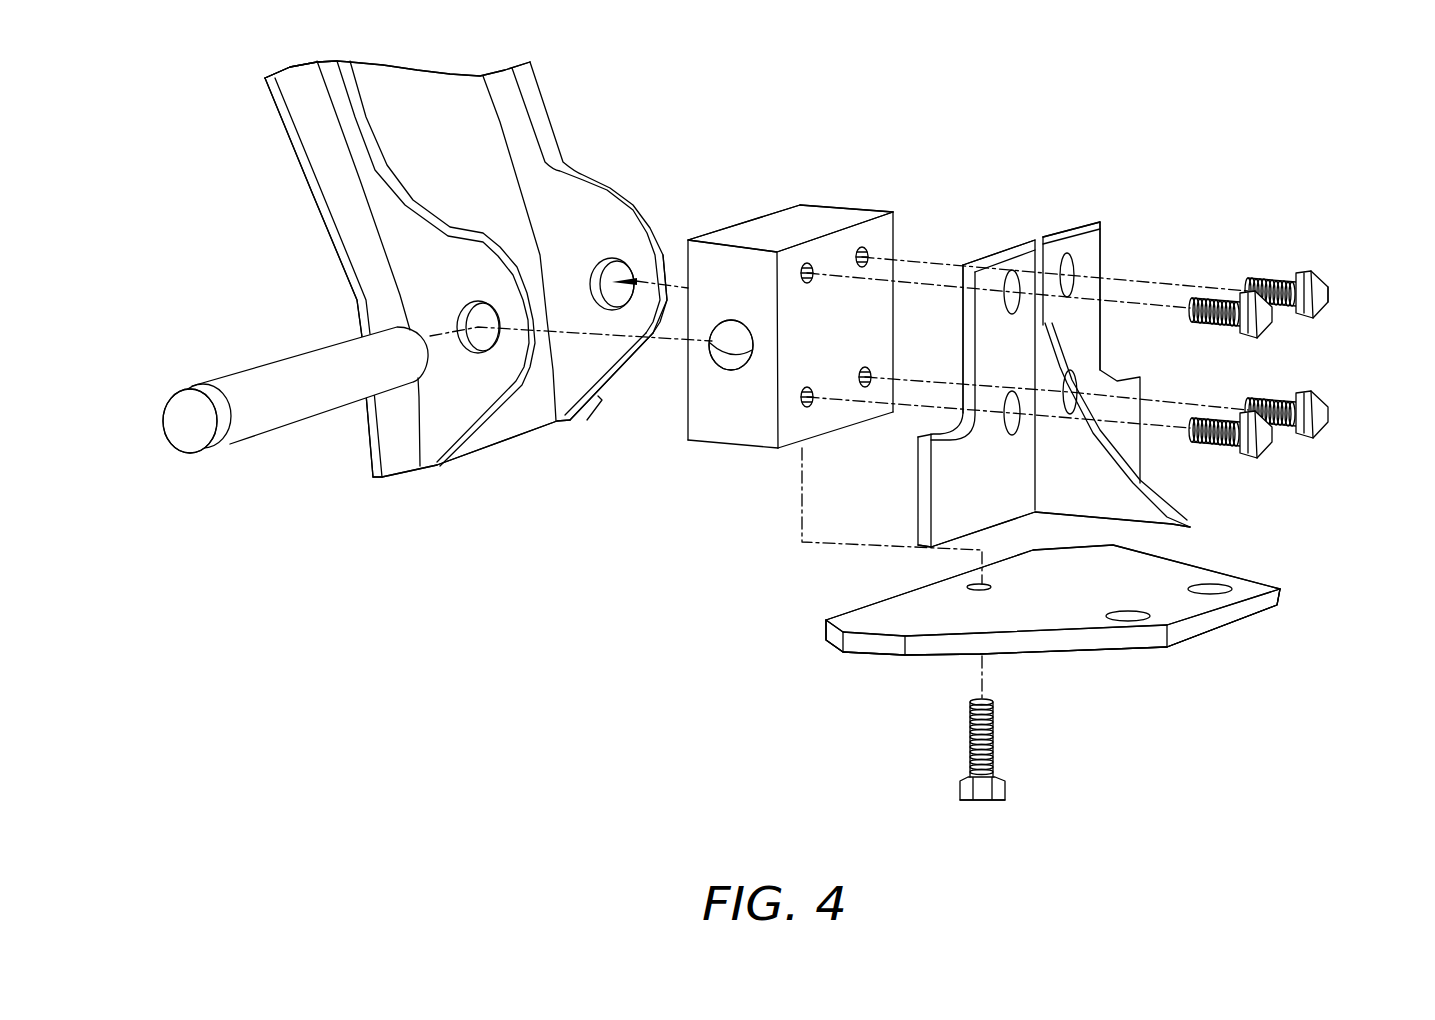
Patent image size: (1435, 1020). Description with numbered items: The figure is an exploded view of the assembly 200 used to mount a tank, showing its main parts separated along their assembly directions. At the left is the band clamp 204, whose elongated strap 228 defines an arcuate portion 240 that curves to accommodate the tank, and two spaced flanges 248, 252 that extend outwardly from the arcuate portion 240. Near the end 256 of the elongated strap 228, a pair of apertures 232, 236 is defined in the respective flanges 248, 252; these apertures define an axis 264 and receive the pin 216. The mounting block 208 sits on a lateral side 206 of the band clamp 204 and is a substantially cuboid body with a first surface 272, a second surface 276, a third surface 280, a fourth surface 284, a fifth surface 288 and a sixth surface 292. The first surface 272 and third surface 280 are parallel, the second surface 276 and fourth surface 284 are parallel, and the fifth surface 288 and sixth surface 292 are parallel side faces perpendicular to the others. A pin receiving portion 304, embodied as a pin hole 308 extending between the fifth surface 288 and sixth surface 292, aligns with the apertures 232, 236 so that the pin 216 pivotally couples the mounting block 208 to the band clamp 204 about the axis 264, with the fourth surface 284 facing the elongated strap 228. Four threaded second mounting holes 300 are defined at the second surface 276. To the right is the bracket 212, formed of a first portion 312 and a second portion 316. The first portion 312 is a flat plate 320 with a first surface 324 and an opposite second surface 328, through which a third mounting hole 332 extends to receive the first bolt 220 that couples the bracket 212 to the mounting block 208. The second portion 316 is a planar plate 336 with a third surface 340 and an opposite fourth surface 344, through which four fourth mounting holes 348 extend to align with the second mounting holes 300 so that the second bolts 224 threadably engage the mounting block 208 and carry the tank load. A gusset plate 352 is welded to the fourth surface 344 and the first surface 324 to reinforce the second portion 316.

The assembly 200 is at (881, 69).
The band clamp 204 is at (553, 86).
The lateral side 206 is at (532, 462).
The mounting block 208 is at (885, 200).
The bracket 212 is at (1053, 438).
The pin 216 is at (180, 370).
The first bolt 220 is at (1009, 805).
The second bolts 224 is at (1276, 342).
The elongated strap 228 is at (440, 98).
The aperture 232 is at (461, 310).
The aperture 236 is at (616, 262).
The arcuate portion 240 is at (400, 104).
The flange 248 is at (343, 90).
The flange 252 is at (570, 212).
The end 256 is at (484, 448).
The axis 264 is at (375, 407).
The first surface 272 is at (762, 448).
The second surface 276 is at (878, 341).
The third surface 280 is at (788, 221).
The fourth surface 284 is at (687, 371).
The fifth surface 288 is at (704, 422).
The sixth surface 292 is at (848, 208).
The second mounting holes 300 is at (815, 280).
The pin receiving portion 304 is at (734, 358).
The pin hole 308 is at (731, 345).
The first portion 312 is at (1200, 640).
The second portion 316 is at (1105, 209).
The flat plate 320 is at (1053, 622).
The first surface 324 is at (1200, 571).
The second surface 328 is at (1053, 657).
The third mounting hole 332 is at (963, 583).
The planar plate 336 is at (1054, 384).
The third surface 340 is at (918, 495).
The fourth surface 344 is at (1096, 248).
The fourth mounting holes 348 is at (1020, 300).
The gusset plate 352 is at (1150, 498).